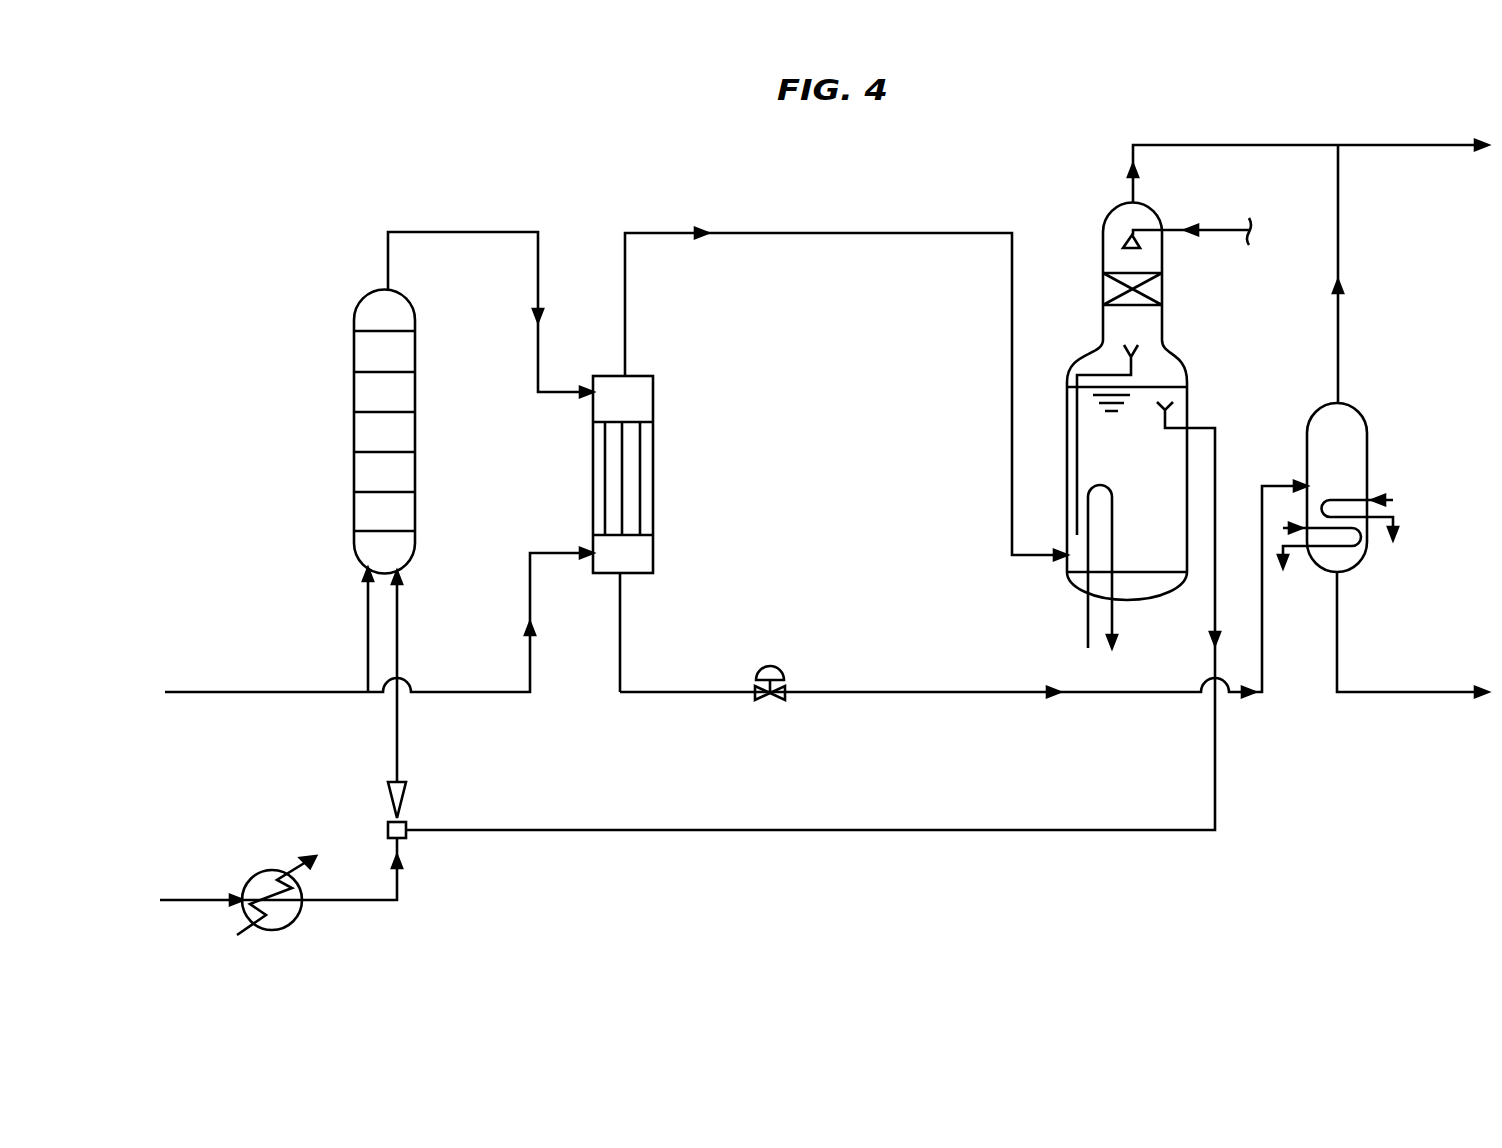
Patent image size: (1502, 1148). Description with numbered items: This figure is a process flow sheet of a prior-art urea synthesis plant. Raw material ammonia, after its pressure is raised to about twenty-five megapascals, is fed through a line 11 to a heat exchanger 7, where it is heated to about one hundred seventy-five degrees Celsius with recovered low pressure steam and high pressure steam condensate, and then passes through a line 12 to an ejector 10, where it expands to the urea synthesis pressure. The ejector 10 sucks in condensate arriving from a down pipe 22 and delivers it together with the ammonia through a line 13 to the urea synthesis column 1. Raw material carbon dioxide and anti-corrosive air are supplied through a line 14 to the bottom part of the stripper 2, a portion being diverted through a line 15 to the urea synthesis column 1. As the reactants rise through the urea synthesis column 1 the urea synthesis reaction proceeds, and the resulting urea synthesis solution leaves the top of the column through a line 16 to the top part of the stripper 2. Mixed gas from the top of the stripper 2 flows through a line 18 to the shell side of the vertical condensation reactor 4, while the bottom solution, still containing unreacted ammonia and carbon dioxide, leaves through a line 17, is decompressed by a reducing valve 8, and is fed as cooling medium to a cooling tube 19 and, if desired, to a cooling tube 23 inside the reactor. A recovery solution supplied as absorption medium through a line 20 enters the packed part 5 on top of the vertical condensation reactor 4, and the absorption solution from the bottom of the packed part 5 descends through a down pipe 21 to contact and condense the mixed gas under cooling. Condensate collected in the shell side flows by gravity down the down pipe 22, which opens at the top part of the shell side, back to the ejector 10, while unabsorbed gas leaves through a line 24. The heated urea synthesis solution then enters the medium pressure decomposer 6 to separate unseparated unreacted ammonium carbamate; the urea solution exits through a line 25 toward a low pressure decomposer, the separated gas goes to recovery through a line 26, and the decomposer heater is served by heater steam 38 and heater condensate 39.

The urea synthesis column 1 is at (415, 318).
The stripper 2 is at (653, 378).
The vertical condensation reactor 4 is at (1187, 360).
The packed part 5 is at (1162, 278).
The medium pressure decomposer 6 is at (1367, 440).
The heat exchanger 7 is at (293, 922).
The reducing valve 8 is at (770, 700).
The ejector 10 is at (406, 790).
The line 11 is at (185, 900).
The line 12 is at (370, 900).
The line 13 is at (397, 605).
The line 14 is at (193, 692).
The line 15 is at (368, 608).
The line 16 is at (498, 232).
The line 17 is at (620, 625).
The line 18 is at (627, 298).
The cooling tube 19 is at (884, 693).
The line 20 is at (1233, 231).
The down pipe 21 is at (1077, 442).
The down pipe 22 is at (1215, 443).
The cooling tube 23 is at (1088, 617).
The line 24 is at (1237, 145).
The line 25 is at (1337, 613).
The line 26 is at (1338, 235).
The heater steam 38 is at (1378, 520).
The heater condensate 39 is at (1297, 547).